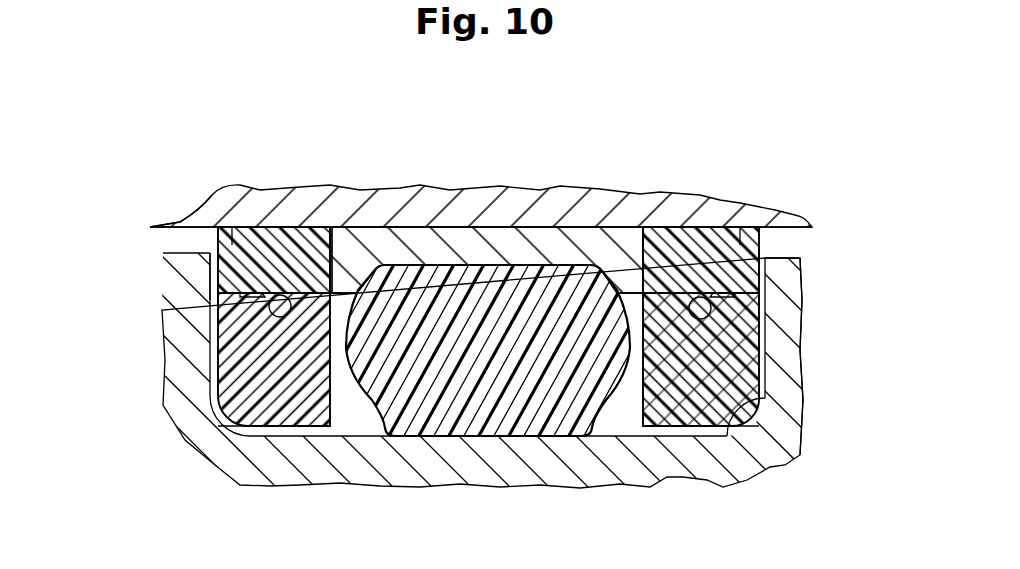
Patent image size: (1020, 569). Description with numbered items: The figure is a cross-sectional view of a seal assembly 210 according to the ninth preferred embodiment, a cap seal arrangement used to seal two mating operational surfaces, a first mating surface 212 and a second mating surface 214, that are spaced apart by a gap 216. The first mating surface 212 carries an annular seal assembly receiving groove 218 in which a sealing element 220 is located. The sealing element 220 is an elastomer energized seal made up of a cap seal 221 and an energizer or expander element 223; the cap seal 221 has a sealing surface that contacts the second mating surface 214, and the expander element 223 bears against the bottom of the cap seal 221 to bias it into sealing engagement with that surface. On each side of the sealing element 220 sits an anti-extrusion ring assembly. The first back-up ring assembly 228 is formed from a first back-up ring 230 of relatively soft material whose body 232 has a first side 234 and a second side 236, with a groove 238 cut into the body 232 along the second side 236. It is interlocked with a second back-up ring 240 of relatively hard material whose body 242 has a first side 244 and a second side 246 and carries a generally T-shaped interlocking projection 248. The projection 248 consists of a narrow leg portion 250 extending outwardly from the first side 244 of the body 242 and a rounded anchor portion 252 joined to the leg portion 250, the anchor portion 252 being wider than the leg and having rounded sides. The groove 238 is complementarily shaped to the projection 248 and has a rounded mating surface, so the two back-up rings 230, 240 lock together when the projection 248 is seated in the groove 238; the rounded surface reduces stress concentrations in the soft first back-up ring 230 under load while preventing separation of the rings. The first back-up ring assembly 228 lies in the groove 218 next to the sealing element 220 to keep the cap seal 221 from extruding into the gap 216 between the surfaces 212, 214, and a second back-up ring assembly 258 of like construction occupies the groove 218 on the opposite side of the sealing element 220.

The seal assembly 210 is at (812, 223).
The first mating surface 212 is at (800, 253).
The second mating surface 214 is at (163, 227).
The gap 216 is at (812, 243).
The seal assembly receiving groove 218 is at (805, 282).
The sealing element 220 is at (478, 245).
The cap seal 221 is at (522, 250).
The expander element 223 is at (527, 395).
The first back-up ring assembly 228 is at (765, 328).
The first back-up ring 230 is at (185, 385).
The body 232 is at (768, 470).
The first side 234 is at (333, 398).
The second side 236 is at (295, 283).
The groove 238 is at (256, 283).
The second back-up ring 240 is at (222, 245).
The body 242 is at (250, 245).
The first side 244 is at (765, 420).
The second side 246 is at (338, 262).
The interlocking projection 248 is at (265, 322).
The leg portion 250 is at (210, 294).
The anchor portion 252 is at (235, 387).
The second back-up ring assembly 258 is at (212, 352).